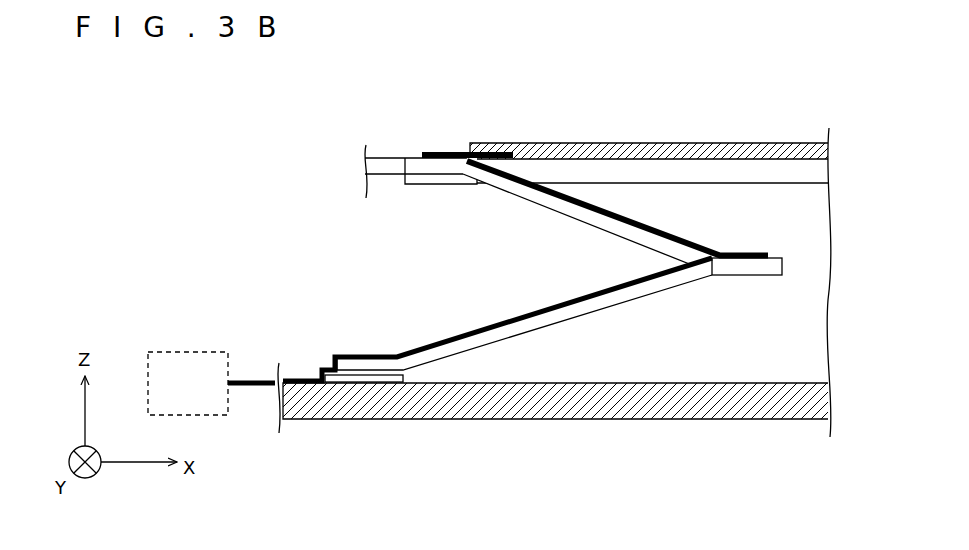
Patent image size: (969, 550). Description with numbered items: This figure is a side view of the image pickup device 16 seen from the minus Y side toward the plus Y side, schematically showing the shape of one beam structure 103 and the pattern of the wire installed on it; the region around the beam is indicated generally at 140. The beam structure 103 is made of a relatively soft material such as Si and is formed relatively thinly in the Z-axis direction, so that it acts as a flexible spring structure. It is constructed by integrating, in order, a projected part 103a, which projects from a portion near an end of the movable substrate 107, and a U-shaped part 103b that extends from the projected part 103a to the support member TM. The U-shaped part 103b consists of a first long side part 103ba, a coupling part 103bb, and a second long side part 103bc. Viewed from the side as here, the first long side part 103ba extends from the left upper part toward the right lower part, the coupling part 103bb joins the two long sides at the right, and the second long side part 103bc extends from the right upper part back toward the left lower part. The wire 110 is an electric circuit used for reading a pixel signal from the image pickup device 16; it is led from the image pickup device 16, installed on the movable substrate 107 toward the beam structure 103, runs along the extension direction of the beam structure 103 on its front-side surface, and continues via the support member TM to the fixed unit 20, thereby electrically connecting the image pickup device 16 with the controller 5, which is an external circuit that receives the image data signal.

The light emitting element / device section 140 is at (550, 117).
The image pickup device 16 is at (650, 143).
The wire 110 is at (443, 152).
The movable substrate 107 is at (793, 183).
The projected part 103a is at (428, 168).
The first long side part 103ba is at (520, 195).
The coupling part 103bb is at (767, 263).
The second long side part 103bc is at (562, 313).
The U-shaped part 103b is at (539, 269).
The beam structure 103 is at (539, 269).
The support member TM is at (407, 380).
The fixed unit 20 is at (593, 419).
The controller 5 is at (185, 352).